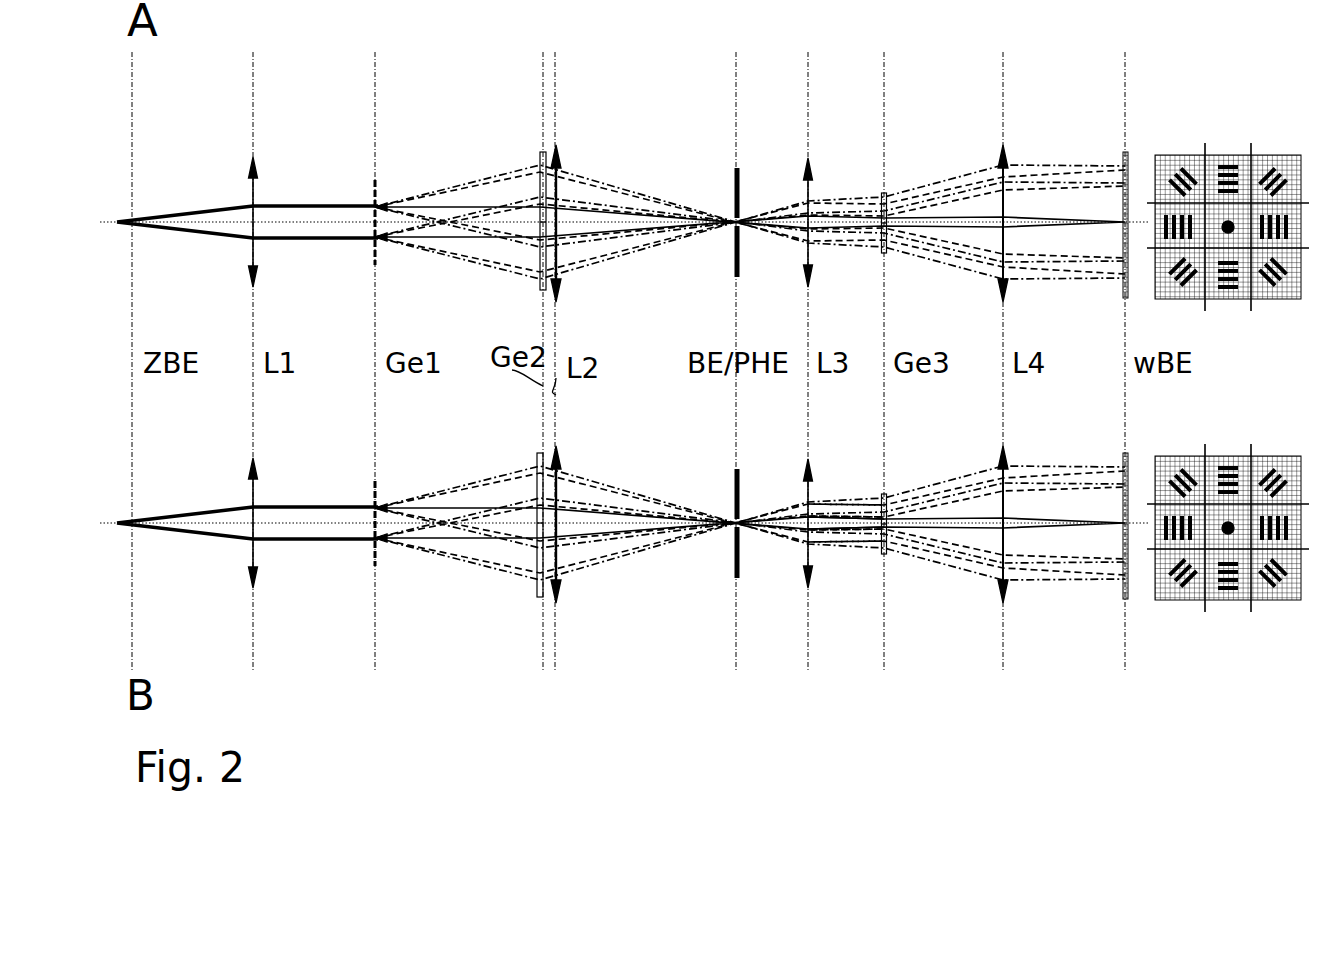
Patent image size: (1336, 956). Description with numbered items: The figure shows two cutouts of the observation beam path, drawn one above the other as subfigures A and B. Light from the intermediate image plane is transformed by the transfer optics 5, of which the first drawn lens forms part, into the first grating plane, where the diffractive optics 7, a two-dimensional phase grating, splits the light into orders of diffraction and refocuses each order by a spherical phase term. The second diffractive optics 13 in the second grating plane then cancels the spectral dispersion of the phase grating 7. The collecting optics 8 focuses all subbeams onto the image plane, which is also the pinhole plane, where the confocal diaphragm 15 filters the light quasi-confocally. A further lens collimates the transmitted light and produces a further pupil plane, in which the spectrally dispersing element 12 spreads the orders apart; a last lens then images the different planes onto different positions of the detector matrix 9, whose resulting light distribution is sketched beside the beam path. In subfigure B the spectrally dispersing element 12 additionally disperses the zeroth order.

The transfer optics 5 is at (256, 158).
The diffractive optics 7 is at (377, 180).
The collecting optics 8 is at (558, 150).
The diffractive optics 13 is at (543, 152).
The confocal diaphragm 15 is at (740, 170).
The detector matrix 9 is at (1130, 152).
The spectrally dispersing element 12 is at (856, 540).